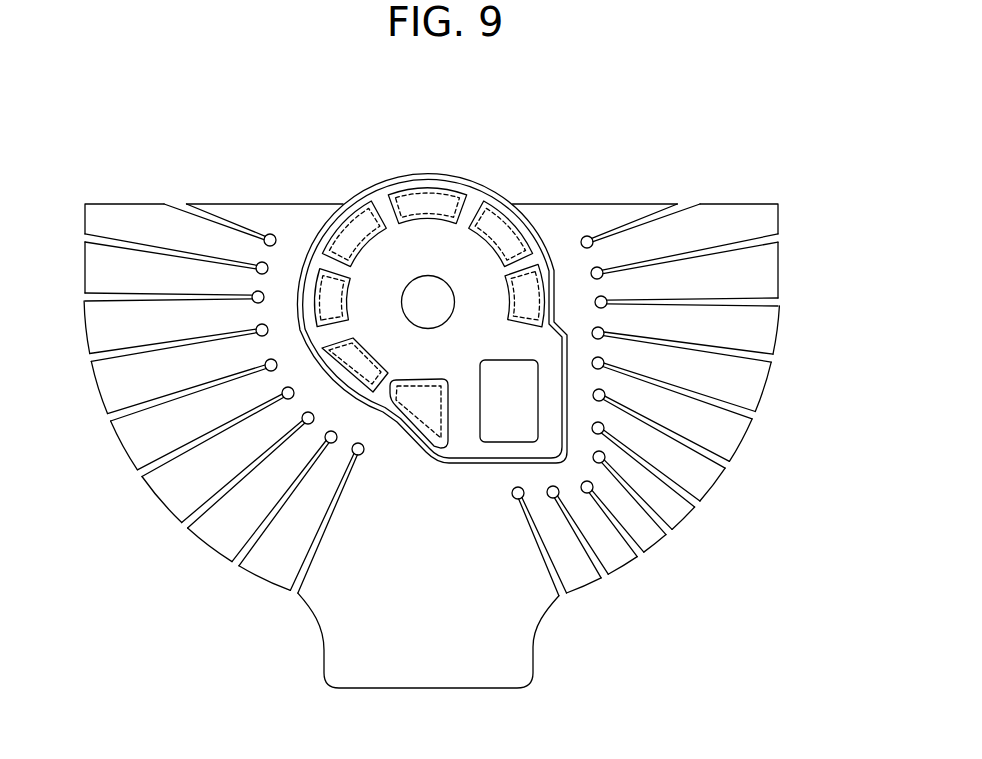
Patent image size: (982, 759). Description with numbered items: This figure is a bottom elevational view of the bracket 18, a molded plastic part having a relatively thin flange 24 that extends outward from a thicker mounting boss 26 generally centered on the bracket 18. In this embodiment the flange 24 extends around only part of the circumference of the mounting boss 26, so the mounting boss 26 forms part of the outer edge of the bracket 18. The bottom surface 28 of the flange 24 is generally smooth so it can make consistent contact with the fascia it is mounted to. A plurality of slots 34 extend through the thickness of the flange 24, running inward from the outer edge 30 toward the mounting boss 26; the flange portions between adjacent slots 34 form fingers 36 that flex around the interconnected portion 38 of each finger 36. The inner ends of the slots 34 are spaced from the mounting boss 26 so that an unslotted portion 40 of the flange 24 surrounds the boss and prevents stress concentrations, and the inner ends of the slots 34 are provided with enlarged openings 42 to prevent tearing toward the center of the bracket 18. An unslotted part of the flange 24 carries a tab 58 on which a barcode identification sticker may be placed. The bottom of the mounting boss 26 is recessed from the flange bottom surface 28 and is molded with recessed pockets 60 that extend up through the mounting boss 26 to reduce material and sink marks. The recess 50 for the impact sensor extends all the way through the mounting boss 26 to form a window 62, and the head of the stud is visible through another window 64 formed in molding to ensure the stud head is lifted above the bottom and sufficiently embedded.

The bracket 18 is at (128, 156).
The flange 24 is at (778, 333).
The mounting boss 26 is at (464, 172).
The bottom surface 28 is at (748, 273).
The outer edge 30 is at (88, 325).
The slot 34 is at (223, 497).
The finger 36 is at (145, 435).
The interconnected portion 38 is at (267, 255).
The unslotted portion 40 is at (579, 362).
The enlarged opening 42 is at (182, 480).
The recess 50 is at (510, 413).
The tab 58 is at (324, 646).
The recessed pocket 60 is at (357, 235).
The window 62 is at (538, 408).
The window 64 is at (429, 277).